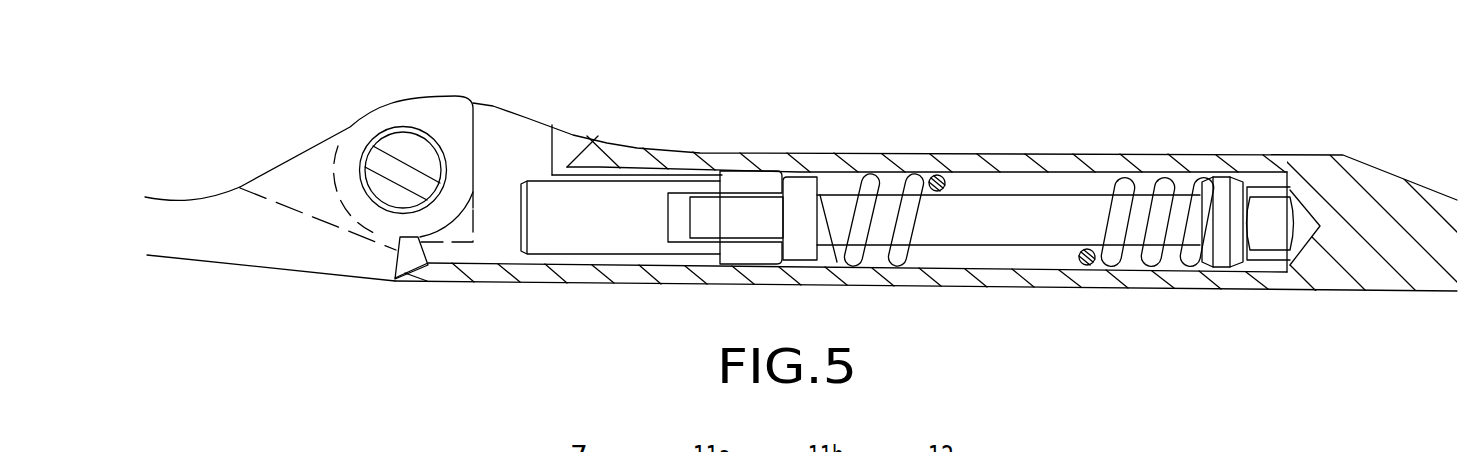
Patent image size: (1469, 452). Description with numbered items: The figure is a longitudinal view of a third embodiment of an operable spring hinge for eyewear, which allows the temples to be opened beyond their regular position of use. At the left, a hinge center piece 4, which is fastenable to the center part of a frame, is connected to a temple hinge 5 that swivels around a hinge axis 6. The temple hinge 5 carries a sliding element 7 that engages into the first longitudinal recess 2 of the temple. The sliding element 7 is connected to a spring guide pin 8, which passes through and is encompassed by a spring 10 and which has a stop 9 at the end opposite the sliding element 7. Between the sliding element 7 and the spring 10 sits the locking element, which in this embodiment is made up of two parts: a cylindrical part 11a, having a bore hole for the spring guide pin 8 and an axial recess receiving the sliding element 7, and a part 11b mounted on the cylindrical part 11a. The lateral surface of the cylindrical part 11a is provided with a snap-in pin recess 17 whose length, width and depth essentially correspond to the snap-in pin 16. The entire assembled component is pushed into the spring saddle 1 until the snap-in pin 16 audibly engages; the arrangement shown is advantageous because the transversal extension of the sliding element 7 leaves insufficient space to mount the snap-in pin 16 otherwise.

The spring saddle 1 is at (1318, 170).
The first longitudinal recess 2 is at (1050, 185).
The hinge center piece 4 is at (286, 190).
The temple hinge 5 is at (519, 143).
The hinge axis 6 is at (404, 170).
The sliding element 7 is at (628, 178).
The spring guide pin 8 is at (985, 212).
The stop 9 is at (1222, 192).
The spring 10 is at (1118, 250).
The cylindrical part 11a is at (622, 230).
The part 11b is at (800, 250).
The snap-in pin 16 is at (746, 226).
The snap-in pin recess 17 is at (680, 205).